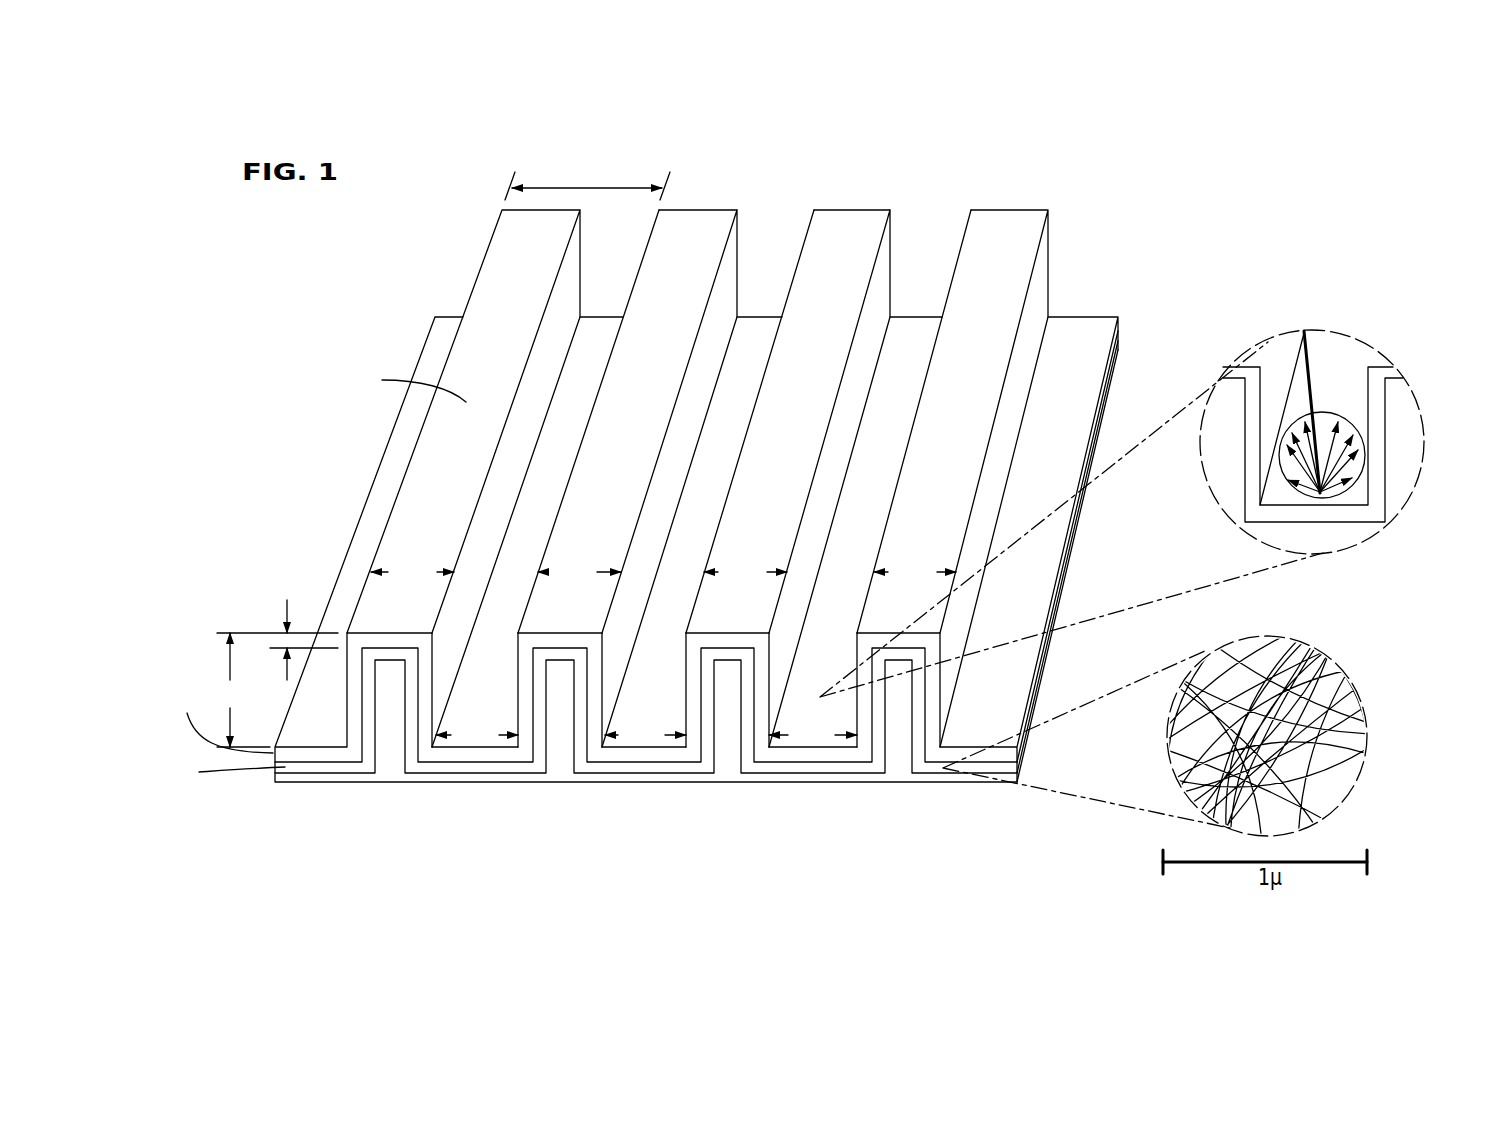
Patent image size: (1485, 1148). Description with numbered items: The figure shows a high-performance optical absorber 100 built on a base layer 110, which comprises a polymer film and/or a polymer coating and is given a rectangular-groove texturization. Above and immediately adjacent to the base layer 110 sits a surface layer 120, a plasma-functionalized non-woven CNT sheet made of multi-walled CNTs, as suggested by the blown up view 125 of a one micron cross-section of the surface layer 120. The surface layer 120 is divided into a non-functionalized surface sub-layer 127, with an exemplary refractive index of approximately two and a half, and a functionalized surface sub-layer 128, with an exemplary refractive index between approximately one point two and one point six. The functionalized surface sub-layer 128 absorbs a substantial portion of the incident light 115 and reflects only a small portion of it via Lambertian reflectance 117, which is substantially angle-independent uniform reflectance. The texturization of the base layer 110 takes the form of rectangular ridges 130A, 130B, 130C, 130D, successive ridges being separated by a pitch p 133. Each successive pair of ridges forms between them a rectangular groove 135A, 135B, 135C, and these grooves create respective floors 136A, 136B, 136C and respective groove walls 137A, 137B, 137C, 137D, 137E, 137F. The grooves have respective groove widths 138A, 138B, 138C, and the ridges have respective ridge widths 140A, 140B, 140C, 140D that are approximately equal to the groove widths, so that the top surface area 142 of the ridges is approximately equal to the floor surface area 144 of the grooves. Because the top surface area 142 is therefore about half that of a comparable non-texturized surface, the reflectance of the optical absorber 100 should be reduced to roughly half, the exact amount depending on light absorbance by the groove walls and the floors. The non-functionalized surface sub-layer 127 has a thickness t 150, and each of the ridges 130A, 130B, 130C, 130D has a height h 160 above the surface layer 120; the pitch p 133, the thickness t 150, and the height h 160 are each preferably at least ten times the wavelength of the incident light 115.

The high-performance optical absorber 100 is at (915, 906).
The base layer 110 is at (455, 140).
The incident light 115 is at (1310, 380).
The Lambertian reflectance 117 is at (1352, 423).
The surface layer 120 is at (1034, 745).
The blown up view 125 is at (1368, 716).
The non-functionalized surface sub-layer 127 is at (330, 768).
The functionalized surface sub-layer 128 is at (353, 752).
The rectangular ridge 130A is at (537, 283).
The rectangular ridge 130B is at (690, 283).
The rectangular ridge 130C is at (850, 283).
The rectangular ridge 130D is at (1007, 283).
The pitch p 133 is at (578, 188).
The rectangular groove 135A is at (548, 790).
The rectangular groove 135B is at (714, 790).
The rectangular groove 135C is at (877, 790).
The floor 136A is at (558, 515).
The floor 136B is at (718, 521).
The floor 136C is at (880, 528).
The groove wall 137A is at (547, 425).
The groove wall 137B is at (652, 234).
The groove wall 137C is at (722, 375).
The groove wall 137D is at (803, 238).
The groove wall 137E is at (877, 401).
The groove wall 137F is at (962, 245).
The groove width 138A is at (477, 734).
The groove width 138B is at (645, 734).
The groove width 138C is at (813, 734).
The ridge width 140A is at (412, 572).
The ridge width 140B is at (579, 572).
The ridge width 140C is at (745, 572).
The ridge width 140D is at (915, 572).
The top surface area 142 is at (502, 372).
The floor surface area 144 is at (550, 463).
The thickness t 150 is at (277, 639).
The height h 160 is at (238, 690).